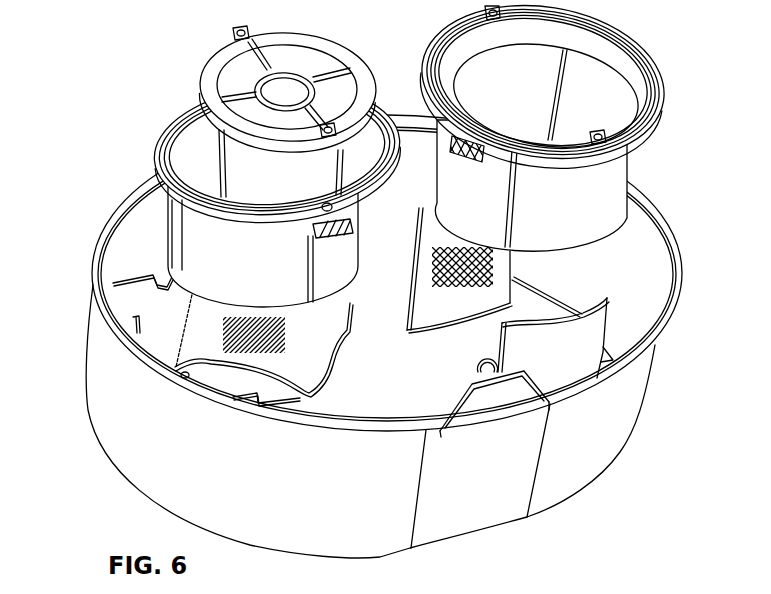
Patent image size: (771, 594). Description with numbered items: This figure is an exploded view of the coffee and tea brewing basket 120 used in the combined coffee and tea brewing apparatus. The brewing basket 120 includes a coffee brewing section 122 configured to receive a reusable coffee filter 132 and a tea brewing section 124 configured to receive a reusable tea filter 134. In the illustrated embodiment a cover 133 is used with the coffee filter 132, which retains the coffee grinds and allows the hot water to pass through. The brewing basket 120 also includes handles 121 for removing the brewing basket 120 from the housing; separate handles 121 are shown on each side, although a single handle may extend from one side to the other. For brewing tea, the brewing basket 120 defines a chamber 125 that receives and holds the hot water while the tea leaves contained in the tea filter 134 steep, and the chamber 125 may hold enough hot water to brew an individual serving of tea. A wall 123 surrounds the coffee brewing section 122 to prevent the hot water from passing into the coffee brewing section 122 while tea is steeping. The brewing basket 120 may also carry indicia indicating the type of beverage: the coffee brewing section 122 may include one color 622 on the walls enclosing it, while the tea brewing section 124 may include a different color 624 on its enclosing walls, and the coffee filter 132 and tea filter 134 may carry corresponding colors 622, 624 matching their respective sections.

The coffee and tea brewing basket 120 is at (92, 392).
The handle 121 is at (478, 407).
The coffee brewing section 122 is at (128, 255).
The wall 123 is at (320, 405).
The tea brewing section 124 is at (635, 255).
The chamber 125 is at (372, 379).
The coffee filter 132 is at (165, 212).
The cover 133 is at (210, 71).
The tea filter 134 is at (618, 177).
The color 622 is at (300, 238).
The color 624 is at (440, 272).